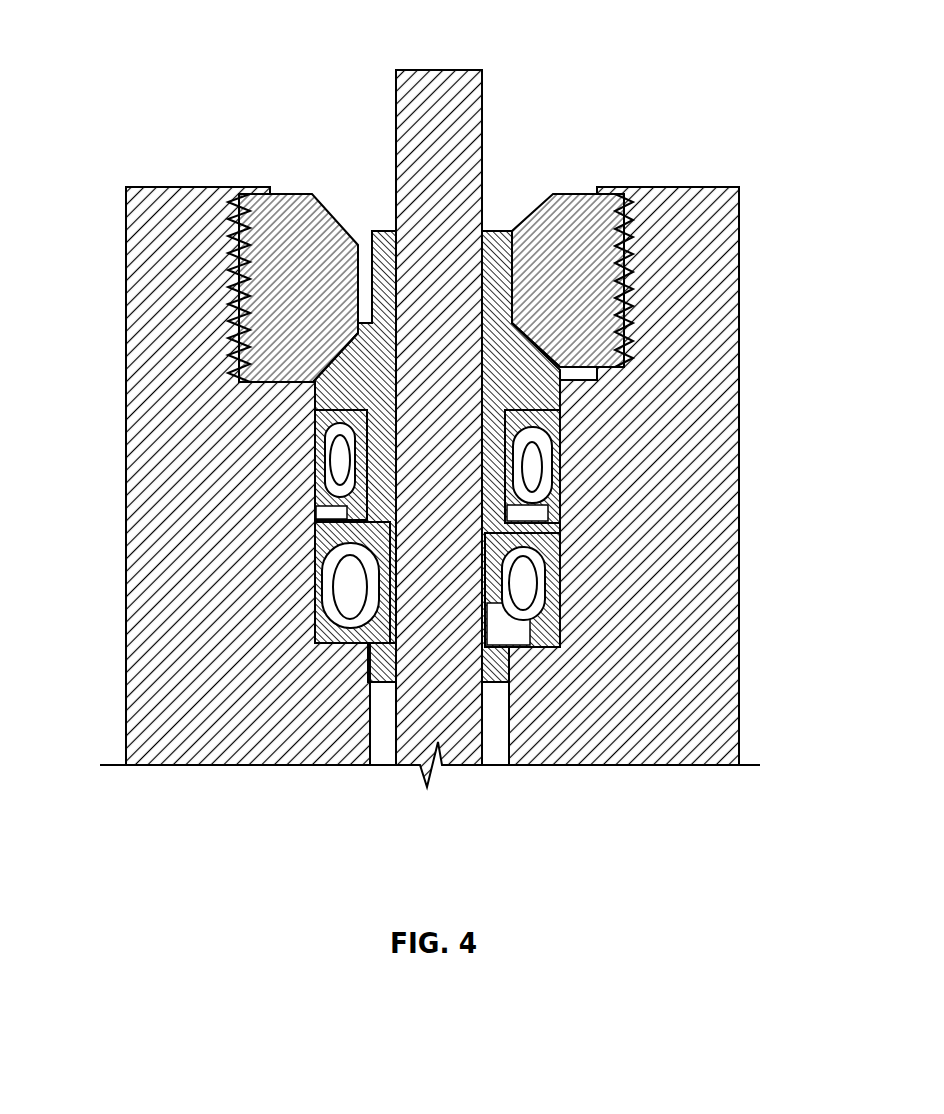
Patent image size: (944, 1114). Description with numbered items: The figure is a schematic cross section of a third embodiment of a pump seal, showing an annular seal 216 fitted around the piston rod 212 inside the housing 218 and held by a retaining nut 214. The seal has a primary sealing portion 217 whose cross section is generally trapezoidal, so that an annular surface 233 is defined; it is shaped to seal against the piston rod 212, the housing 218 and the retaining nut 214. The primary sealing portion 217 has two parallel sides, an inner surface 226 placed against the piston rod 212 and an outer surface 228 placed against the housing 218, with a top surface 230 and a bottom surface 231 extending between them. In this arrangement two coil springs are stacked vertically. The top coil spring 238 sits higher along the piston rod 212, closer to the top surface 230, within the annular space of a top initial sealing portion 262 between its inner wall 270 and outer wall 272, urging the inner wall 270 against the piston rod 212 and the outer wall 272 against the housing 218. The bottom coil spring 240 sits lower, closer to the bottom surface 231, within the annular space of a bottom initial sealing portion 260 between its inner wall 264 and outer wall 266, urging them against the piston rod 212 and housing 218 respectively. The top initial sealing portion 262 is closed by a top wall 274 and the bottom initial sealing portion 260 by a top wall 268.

The piston rod 212 is at (440, 68).
The retaining nut 214 is at (572, 200).
The annular seal 216 is at (258, 400).
The primary sealing portion 217 is at (525, 360).
The housing 218 is at (686, 186).
The inner surface 226 is at (203, 457).
The outer surface 228 is at (552, 397).
The top surface 230 is at (384, 231).
The bottom surface 231 is at (385, 682).
The annular surface 233 is at (332, 212).
The top coil spring 238 is at (215, 665).
The bottom coil spring 240 is at (350, 645).
The bottom initial sealing portion 260 is at (654, 563).
The top initial sealing portion 262 is at (664, 436).
The inner wall 264 is at (495, 557).
The outer wall 266 is at (313, 617).
The top wall 268 is at (313, 533).
The inner wall 270 is at (507, 457).
The outer wall 272 is at (313, 463).
The top wall 274 is at (313, 418).